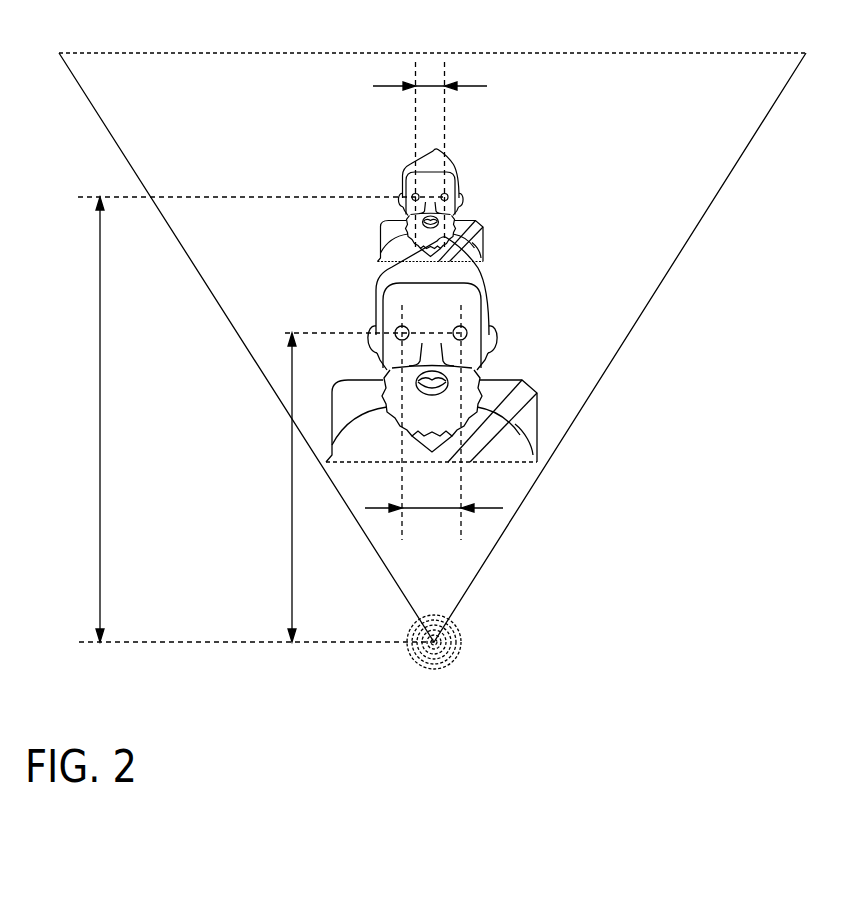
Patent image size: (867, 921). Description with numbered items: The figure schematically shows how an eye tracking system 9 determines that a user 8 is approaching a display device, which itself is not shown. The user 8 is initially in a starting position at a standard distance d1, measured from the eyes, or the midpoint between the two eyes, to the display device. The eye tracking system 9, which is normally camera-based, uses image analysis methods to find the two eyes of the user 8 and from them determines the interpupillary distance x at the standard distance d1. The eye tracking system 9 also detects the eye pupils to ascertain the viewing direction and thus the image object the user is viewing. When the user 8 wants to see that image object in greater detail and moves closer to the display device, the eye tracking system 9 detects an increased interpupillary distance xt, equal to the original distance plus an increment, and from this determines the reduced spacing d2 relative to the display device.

The user 8 is at (422, 165).
The eye tracking system 9 is at (423, 660).
The standard distance d1 is at (84, 419).
The reduced spacing d2 is at (276, 487).
The interpupillary distance x is at (430, 76).
The increased interpupillary distance xt is at (445, 524).